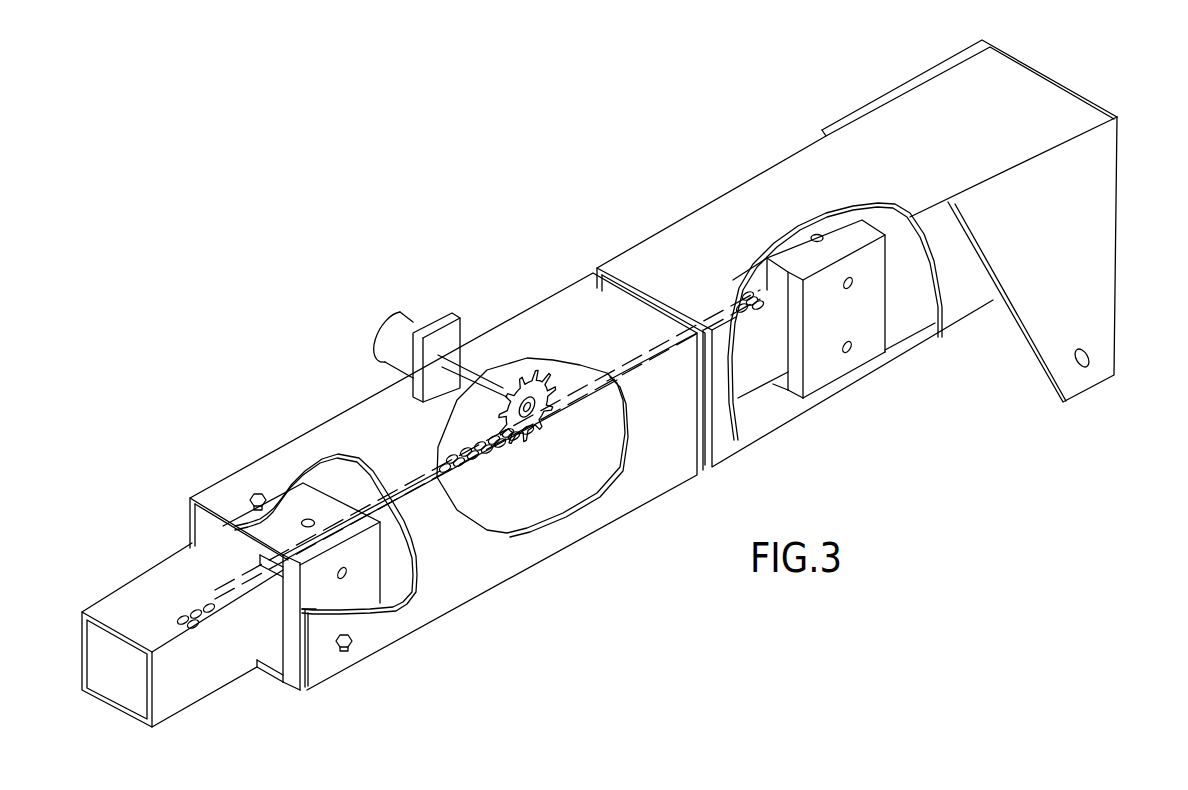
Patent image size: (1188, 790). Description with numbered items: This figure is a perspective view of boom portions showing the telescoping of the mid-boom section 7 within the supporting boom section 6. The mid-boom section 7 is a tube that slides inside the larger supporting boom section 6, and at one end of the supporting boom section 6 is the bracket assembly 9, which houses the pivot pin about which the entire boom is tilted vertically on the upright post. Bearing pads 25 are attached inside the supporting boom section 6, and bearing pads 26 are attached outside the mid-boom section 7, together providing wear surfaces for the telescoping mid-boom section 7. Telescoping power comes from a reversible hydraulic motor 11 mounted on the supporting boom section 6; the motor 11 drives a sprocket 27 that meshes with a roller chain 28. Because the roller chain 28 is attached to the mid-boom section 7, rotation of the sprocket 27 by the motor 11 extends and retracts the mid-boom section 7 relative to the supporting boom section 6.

The supporting boom section 6 is at (567, 543).
The mid-boom section 7 is at (142, 575).
The bracket assembly 9 is at (1115, 227).
The reversible hydraulic motor 11 is at (382, 326).
The bearing pads 25 is at (220, 530).
The bearing pads 26 is at (840, 367).
The sprocket 27 is at (533, 385).
The roller chain 28 is at (470, 447).